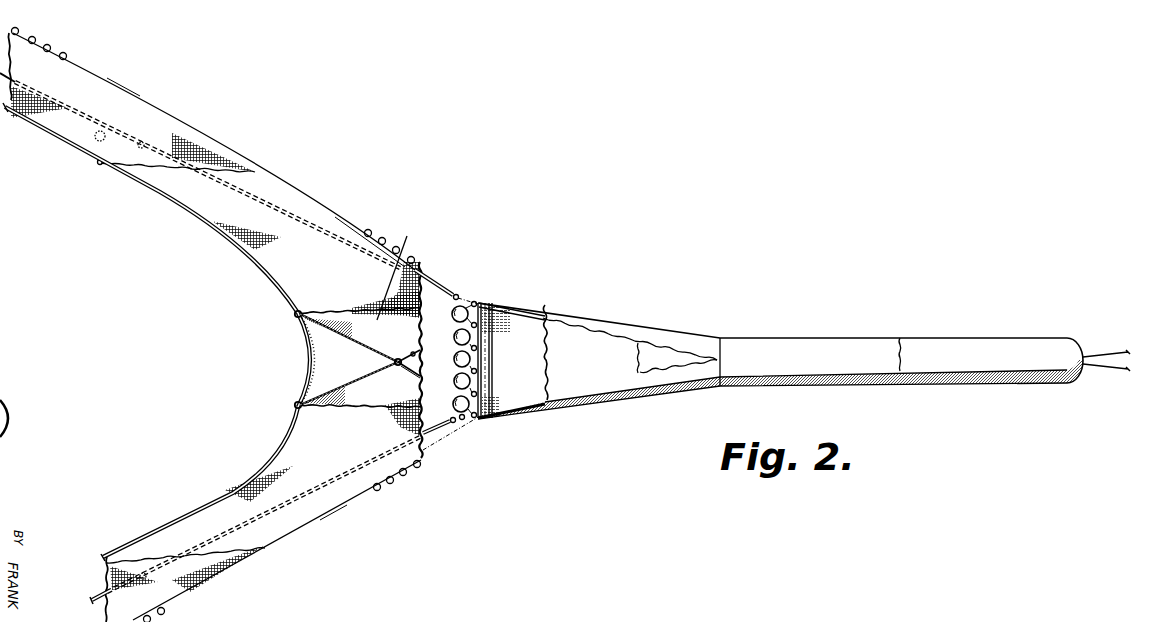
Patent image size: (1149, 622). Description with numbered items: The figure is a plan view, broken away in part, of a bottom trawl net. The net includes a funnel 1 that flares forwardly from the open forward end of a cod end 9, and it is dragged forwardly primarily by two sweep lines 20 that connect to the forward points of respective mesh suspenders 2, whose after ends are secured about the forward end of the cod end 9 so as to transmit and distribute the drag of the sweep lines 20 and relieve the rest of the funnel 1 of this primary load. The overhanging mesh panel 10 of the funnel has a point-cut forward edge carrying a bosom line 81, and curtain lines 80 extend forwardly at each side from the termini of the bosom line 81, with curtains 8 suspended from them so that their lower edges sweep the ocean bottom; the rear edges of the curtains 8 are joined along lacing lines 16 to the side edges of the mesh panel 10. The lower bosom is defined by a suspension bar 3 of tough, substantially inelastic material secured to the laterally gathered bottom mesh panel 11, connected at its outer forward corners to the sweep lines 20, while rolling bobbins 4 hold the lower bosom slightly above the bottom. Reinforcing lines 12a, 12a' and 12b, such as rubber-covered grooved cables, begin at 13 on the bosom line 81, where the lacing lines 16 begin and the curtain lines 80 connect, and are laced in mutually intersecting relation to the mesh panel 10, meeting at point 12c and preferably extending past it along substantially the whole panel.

The funnel 1 is at (671, 321).
The mesh suspenders 2 is at (524, 320).
The suspension bar 3 is at (487, 414).
The rolling bobbins 4 is at (455, 342).
The curtains 8 is at (280, 188).
The cod end 9 is at (920, 338).
The overhanging mesh panel 10 is at (396, 269).
The mesh panel 11 is at (521, 390).
The reinforcing line 12a is at (397, 378).
The reinforcing line 12a' is at (401, 342).
The reinforcing line 12b is at (358, 343).
The meeting point of reinforcing lines 12c is at (416, 378).
The starting point of reinforcing lines 13 is at (295, 314).
The lacing lines 16 is at (331, 310).
The sweep lines 20 is at (200, 172).
The curtain lines 80 is at (132, 181).
The bosom line 81 is at (300, 366).